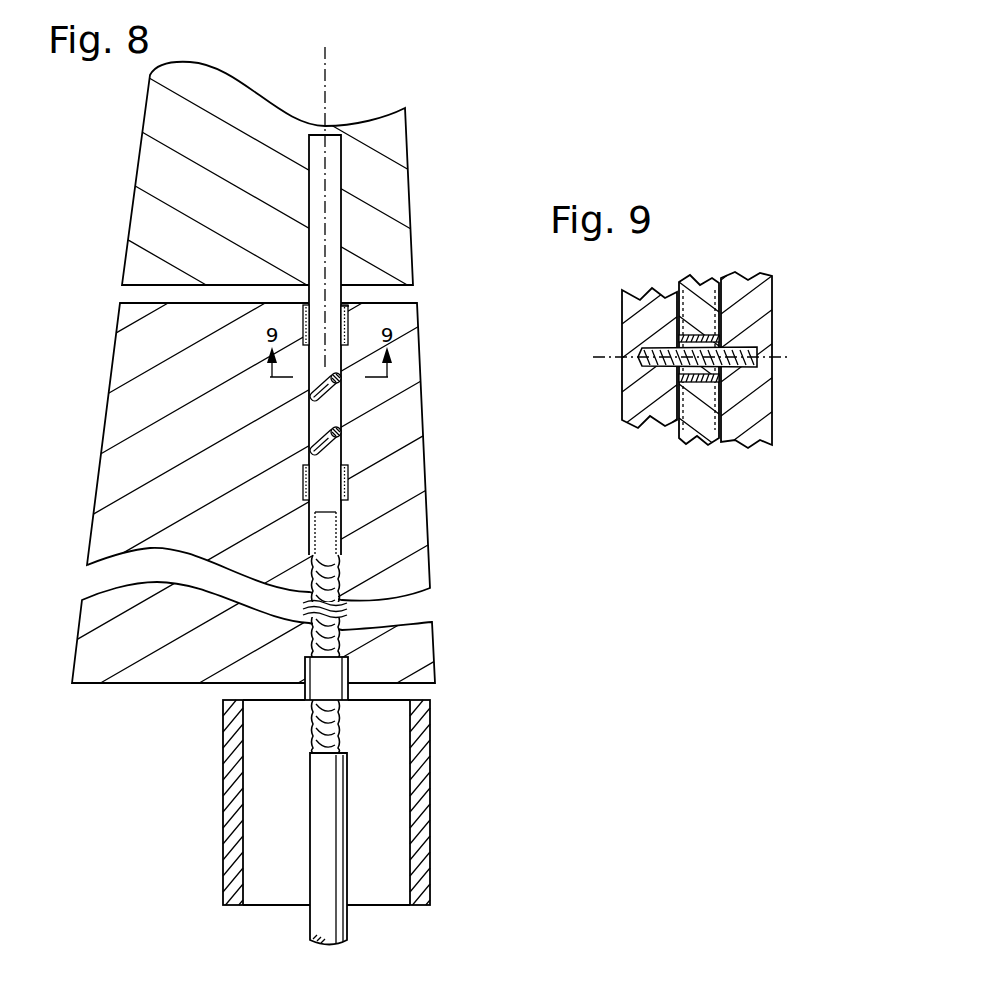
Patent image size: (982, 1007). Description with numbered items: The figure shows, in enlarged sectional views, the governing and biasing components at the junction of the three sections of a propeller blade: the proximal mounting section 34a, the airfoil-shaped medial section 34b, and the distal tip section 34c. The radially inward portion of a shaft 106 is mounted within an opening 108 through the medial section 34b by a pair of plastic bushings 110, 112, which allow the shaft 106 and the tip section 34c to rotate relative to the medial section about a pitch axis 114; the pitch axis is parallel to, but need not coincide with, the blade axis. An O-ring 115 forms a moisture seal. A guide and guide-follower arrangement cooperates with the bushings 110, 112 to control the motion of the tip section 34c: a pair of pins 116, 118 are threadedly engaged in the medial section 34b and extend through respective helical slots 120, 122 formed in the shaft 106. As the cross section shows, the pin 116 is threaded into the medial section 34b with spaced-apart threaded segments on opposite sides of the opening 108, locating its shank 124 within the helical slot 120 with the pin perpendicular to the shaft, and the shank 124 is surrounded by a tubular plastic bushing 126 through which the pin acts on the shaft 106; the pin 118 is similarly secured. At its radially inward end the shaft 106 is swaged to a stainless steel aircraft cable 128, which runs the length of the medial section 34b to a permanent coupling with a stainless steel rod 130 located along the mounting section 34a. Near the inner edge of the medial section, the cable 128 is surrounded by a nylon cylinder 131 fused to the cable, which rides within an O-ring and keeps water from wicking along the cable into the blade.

In FIG. 8, the mounting section 34a is at (431, 875).
In FIG. 8, the medial section 34b is at (123, 417).
In FIG. 9, the medial section 34b is at (627, 318).
In FIG. 8, the tip section 34c is at (148, 167).
In FIG. 8, the shaft 106 is at (341, 227).
In FIG. 9, the shaft 106 is at (703, 425).
In FIG. 9, the opening 108 is at (686, 432).
In FIG. 8, the plastic bushing 110 is at (350, 323).
In FIG. 8, the plastic bushing 112 is at (348, 478).
In FIG. 8, the pitch axis 114 is at (322, 78).
In FIG. 8, the O-ring 115 is at (353, 312).
In FIG. 8, the pin 116 is at (341, 378).
In FIG. 9, the pin 116 is at (766, 357).
In FIG. 8, the pin 118 is at (341, 432).
In FIG. 8, the helical slot 120 is at (316, 396).
In FIG. 8, the helical slot 122 is at (316, 452).
In FIG. 9, the shank 124 is at (701, 382).
In FIG. 9, the tubular plastic bushing 126 is at (702, 335).
In FIG. 8, the cable 128 is at (360, 610).
In FIG. 8, the stainless steel rod 130 is at (347, 810).
In FIG. 8, the cylinder 131 is at (333, 690).